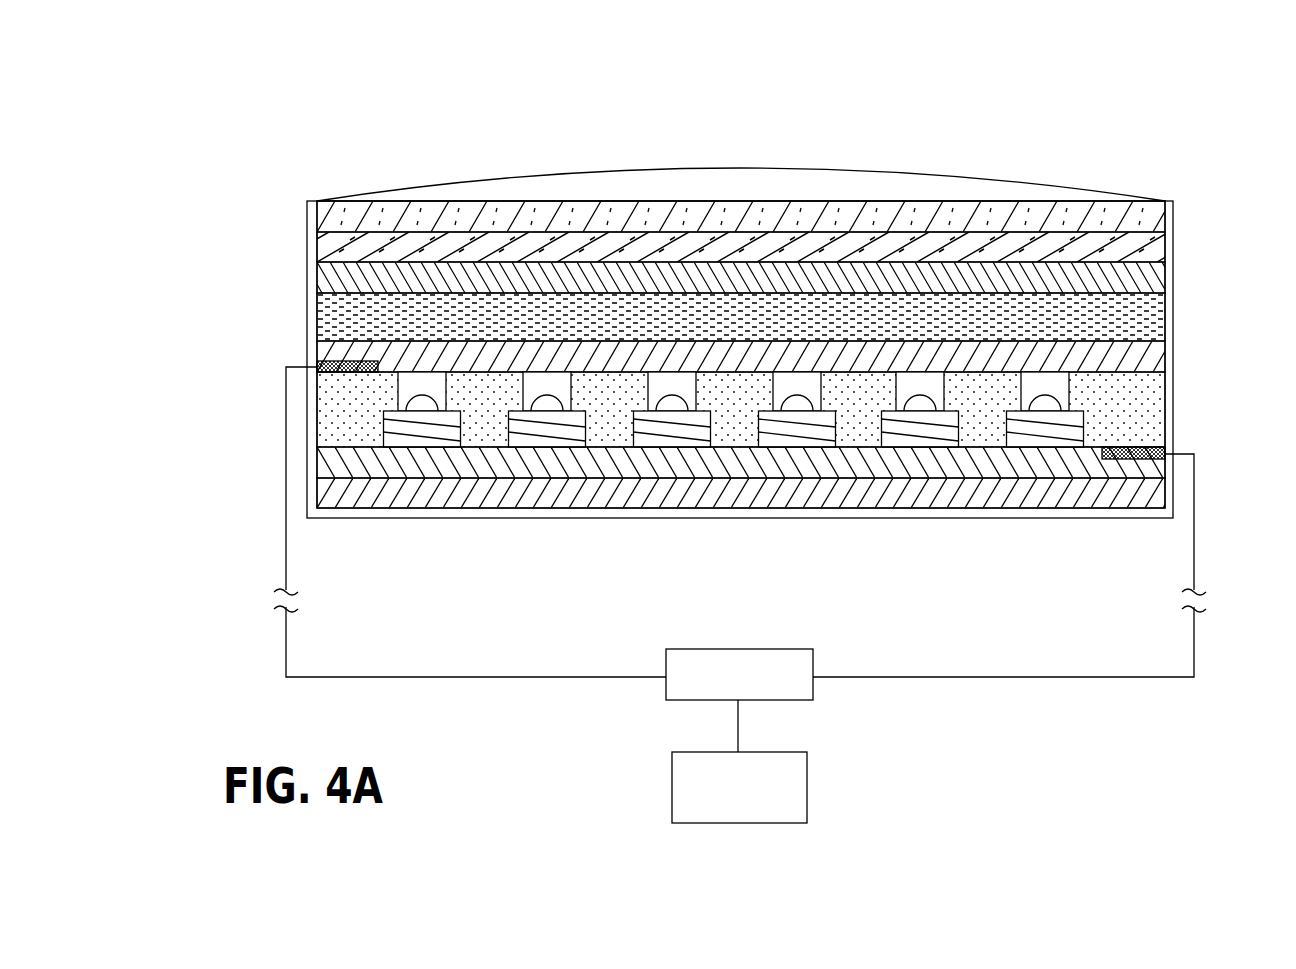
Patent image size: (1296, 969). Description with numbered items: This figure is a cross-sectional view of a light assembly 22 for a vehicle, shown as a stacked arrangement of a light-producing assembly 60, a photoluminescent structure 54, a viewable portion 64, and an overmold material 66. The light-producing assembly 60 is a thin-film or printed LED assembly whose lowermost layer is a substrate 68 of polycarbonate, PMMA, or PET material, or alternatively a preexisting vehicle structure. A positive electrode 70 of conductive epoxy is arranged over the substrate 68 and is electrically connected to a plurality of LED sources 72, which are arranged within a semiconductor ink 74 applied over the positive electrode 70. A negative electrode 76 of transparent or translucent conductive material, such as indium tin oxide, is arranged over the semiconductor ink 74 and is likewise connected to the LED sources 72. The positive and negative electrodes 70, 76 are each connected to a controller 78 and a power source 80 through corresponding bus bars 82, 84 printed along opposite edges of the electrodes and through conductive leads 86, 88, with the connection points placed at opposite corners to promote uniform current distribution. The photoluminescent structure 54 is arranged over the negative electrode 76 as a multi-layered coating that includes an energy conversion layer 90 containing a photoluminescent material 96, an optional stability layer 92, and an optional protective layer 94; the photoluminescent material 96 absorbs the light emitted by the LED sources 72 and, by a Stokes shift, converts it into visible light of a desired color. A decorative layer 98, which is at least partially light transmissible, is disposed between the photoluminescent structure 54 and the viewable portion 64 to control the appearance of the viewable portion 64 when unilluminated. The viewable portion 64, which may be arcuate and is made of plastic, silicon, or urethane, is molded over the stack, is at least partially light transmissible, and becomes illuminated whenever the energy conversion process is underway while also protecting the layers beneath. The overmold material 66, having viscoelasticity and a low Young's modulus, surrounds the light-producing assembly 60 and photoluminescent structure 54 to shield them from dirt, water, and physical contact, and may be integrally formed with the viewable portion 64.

The light assembly 22 is at (1008, 100).
The photoluminescent structure 54 is at (283, 235).
The light-producing assembly 60 is at (223, 512).
The viewable portion 64 is at (1052, 176).
The overmold material 66 is at (1170, 212).
The substrate 68 is at (1166, 496).
The positive electrode 70 is at (1166, 467).
The LED sources 72 is at (437, 432).
The semiconductor ink 74 is at (1166, 403).
The negative electrode 76 is at (1166, 360).
The controller 78 is at (813, 690).
The power source 80 is at (807, 770).
The bus bar 82 is at (1166, 452).
The bus bar 84 is at (318, 366).
The conductive lead 86 is at (1196, 555).
The conductive lead 88 is at (286, 553).
The energy conversion layer 90 is at (1166, 308).
The stability layer 92 is at (1166, 278).
The protective layer 94 is at (1166, 247).
The photoluminescent material 96 is at (1135, 322).
The decorative layer 98 is at (1166, 217).